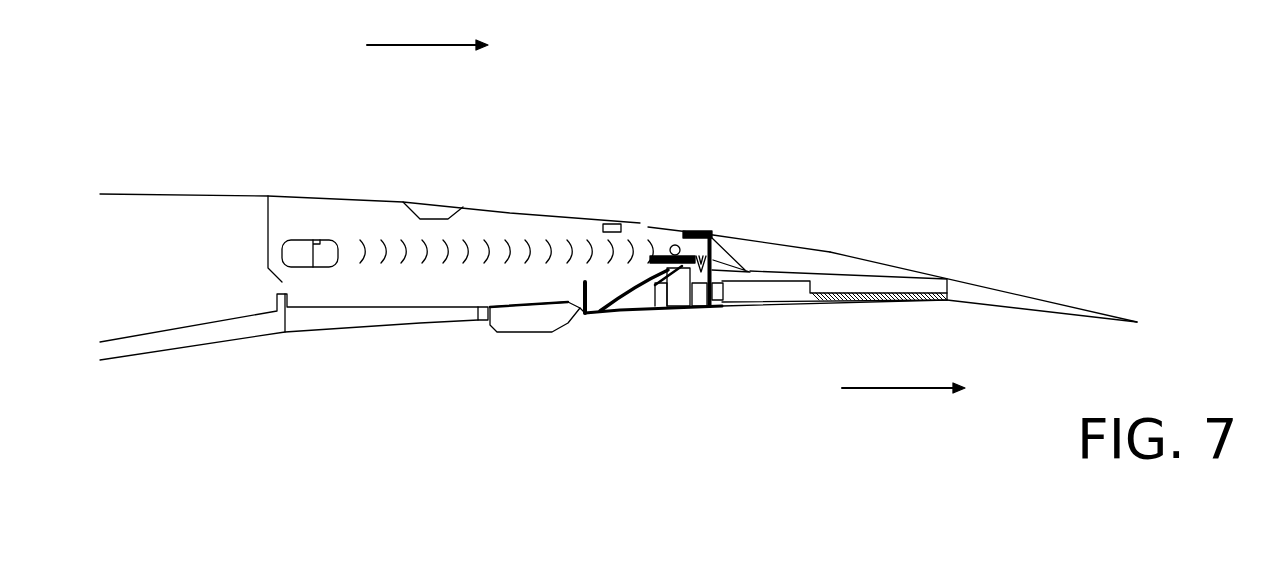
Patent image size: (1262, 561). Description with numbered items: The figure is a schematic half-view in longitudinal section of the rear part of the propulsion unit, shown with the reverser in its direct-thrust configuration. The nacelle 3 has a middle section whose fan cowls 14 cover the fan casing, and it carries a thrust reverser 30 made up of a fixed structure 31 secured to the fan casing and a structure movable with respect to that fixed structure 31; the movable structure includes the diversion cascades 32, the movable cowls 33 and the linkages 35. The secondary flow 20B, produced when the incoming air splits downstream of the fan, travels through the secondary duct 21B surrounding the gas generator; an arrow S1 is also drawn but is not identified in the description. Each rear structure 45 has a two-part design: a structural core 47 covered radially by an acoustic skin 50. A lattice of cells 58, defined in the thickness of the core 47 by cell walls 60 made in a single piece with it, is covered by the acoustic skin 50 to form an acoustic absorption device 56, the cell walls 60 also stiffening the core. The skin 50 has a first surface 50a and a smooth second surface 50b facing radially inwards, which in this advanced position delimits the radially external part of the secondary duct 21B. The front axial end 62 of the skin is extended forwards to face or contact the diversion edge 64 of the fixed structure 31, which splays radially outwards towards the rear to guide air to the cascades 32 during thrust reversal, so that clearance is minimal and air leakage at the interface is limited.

The nacelle 3 is at (320, 112).
The fan cowls 14 is at (160, 193).
The airflow direction S1 is at (410, 47).
The diversion cascades 32 is at (363, 250).
The fixed structure 31 is at (572, 328).
The diversion edge 64 is at (640, 305).
The front axial end 62 is at (613, 313).
The first surface 50a is at (675, 265).
The smooth second surface 50b is at (632, 313).
The acoustic skin 50 is at (645, 320).
The core 47 is at (668, 308).
The cell walls 60 is at (675, 317).
The acoustic absorption device 56 is at (702, 320).
The rear structure 45 is at (686, 236).
The cells 58 is at (657, 258).
The linkages 35 is at (778, 288).
The movable cowls 33 is at (843, 253).
The secondary duct 21B is at (963, 342).
The secondary flow 20B is at (900, 392).
The thrust reverser 30 is at (637, 170).